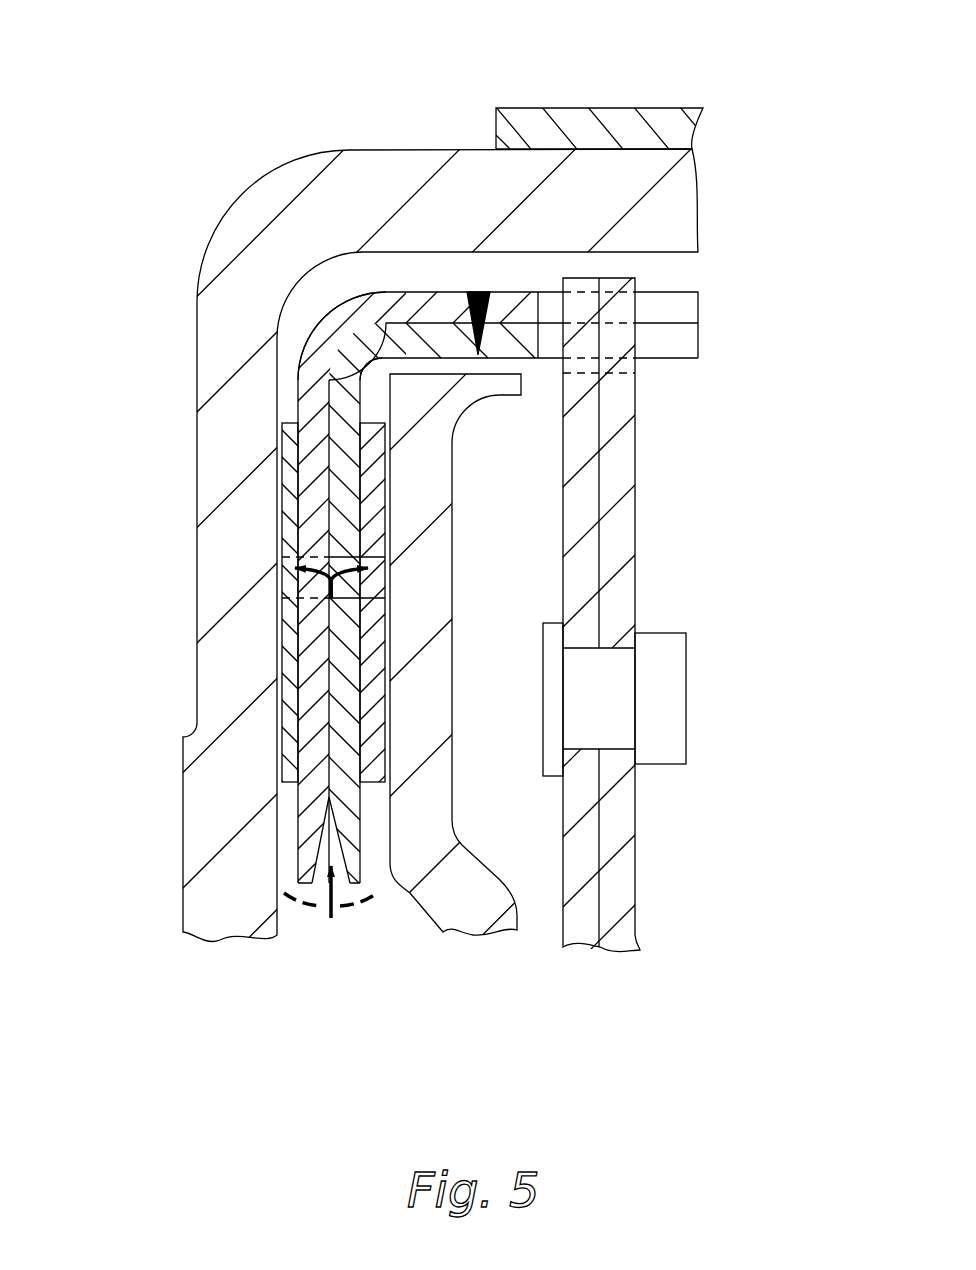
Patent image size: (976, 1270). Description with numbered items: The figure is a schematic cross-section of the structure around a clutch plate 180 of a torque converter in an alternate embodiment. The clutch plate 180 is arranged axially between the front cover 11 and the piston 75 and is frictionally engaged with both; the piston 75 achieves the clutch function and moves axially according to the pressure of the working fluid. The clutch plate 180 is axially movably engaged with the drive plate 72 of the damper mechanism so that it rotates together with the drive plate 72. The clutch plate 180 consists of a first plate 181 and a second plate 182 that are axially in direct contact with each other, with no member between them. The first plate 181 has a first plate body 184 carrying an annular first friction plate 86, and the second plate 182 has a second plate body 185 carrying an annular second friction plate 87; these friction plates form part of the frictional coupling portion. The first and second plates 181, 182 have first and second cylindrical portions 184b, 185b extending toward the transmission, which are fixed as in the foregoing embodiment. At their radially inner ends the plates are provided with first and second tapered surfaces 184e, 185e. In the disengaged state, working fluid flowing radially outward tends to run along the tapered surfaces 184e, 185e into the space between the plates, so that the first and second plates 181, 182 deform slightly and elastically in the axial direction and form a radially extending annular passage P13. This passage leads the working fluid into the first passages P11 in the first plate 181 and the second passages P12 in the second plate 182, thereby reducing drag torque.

The front cover 11 is at (275, 173).
The drive plate 72 is at (655, 540).
The piston 75 is at (503, 851).
The first friction plate 86 is at (282, 662).
The second friction plate 87 is at (373, 646).
The clutch plate 180 is at (428, 516).
The first plate 181 is at (332, 307).
The second plate 182 is at (332, 362).
The first plate body 184 is at (431, 555).
The first cylindrical portion 184b is at (411, 303).
The first tapered surface 184e is at (327, 860).
The second plate body 185 is at (425, 491).
The second cylindrical portion 185b is at (513, 337).
The second tapered surface 185e is at (337, 837).
The first passage P11 is at (278, 551).
The second passage P12 is at (398, 542).
The annular passage P13 is at (323, 645).